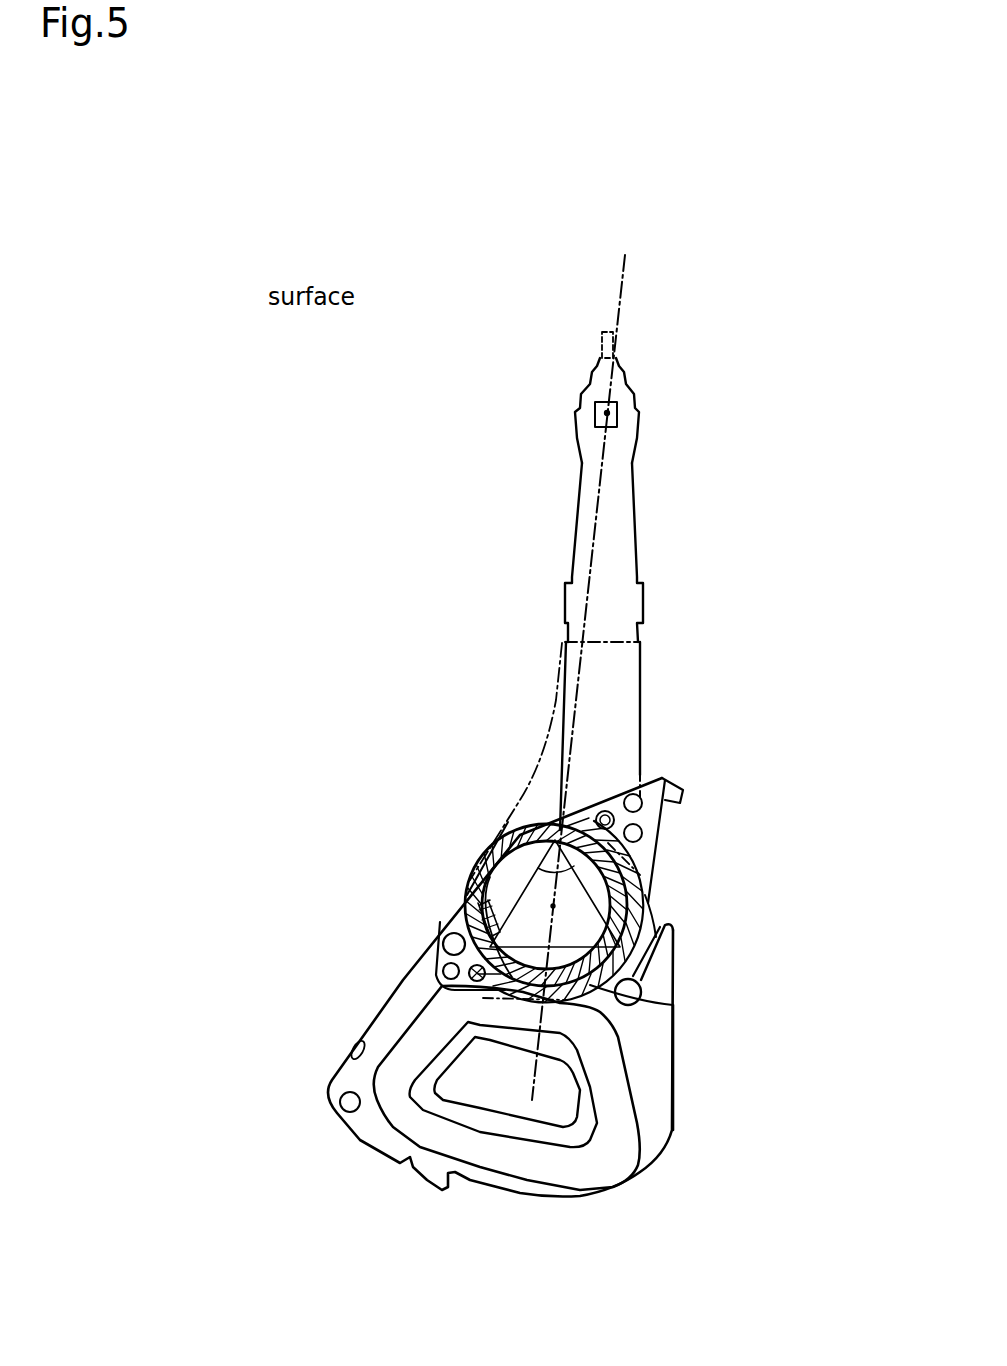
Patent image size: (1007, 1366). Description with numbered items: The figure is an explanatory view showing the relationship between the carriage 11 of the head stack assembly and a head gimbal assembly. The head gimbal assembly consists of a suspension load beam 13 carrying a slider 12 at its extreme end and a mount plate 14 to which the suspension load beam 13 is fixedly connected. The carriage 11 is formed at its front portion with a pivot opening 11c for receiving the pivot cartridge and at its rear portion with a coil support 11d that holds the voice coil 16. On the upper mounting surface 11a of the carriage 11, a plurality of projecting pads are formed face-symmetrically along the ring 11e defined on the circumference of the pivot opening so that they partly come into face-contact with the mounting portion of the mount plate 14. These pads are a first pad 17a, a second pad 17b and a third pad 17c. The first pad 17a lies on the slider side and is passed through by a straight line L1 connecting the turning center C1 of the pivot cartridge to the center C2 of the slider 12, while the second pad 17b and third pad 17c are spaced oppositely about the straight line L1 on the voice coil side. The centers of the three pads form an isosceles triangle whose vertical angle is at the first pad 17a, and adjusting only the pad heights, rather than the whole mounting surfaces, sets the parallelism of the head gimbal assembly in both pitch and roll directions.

The carriage 11 is at (657, 1042).
The upper mounting surface 11a is at (445, 922).
The pivot opening 11c is at (465, 887).
The coil support 11d is at (653, 1133).
The ring 11e is at (660, 853).
The slider 12 is at (618, 413).
The suspension load beam 13 is at (636, 520).
The mount plate 14 is at (641, 743).
The voice coil 16 is at (607, 1083).
The first pad 17a is at (530, 826).
The second pad 17b is at (447, 915).
The third pad 17c is at (650, 913).
The turning center C1 is at (546, 905).
The center of the slider C2 is at (603, 411).
The straight line L1 is at (597, 500).